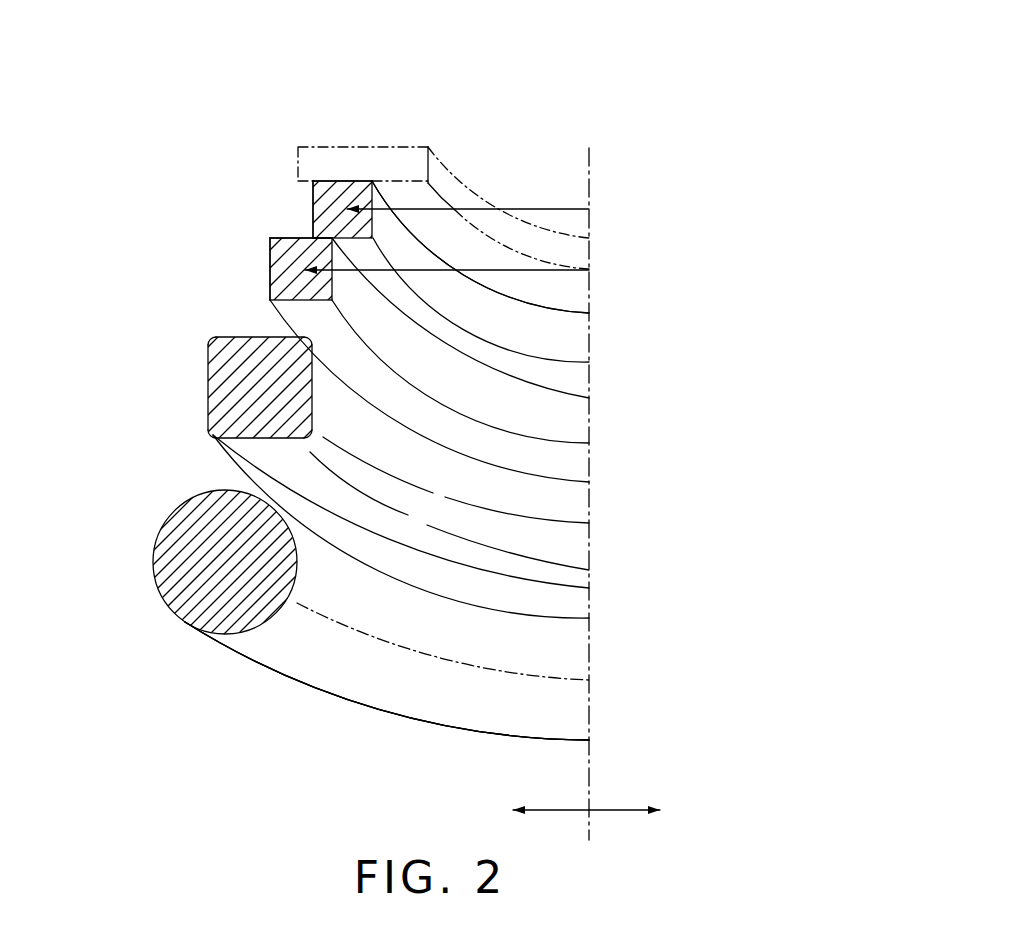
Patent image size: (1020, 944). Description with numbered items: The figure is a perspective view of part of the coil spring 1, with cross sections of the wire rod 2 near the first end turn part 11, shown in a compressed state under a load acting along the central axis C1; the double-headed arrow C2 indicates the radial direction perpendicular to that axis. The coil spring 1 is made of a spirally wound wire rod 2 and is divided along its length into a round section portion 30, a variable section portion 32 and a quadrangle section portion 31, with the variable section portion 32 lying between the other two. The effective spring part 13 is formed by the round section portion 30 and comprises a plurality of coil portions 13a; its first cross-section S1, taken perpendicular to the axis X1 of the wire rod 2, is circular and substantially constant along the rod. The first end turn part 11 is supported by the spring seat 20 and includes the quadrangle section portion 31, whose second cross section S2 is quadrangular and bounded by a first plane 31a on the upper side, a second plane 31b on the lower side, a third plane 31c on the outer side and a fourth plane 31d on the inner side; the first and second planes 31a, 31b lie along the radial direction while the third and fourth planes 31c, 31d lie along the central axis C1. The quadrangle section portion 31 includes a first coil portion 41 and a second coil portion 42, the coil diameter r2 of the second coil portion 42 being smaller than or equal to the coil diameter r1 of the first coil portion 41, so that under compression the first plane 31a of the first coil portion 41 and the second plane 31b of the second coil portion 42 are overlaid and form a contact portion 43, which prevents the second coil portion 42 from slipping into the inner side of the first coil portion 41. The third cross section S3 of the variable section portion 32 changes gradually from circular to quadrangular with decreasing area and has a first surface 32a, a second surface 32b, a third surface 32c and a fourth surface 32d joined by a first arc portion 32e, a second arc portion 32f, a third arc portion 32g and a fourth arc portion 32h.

The coil spring 1 is at (527, 82).
The wire rod 2 is at (230, 648).
The first end turn part 11 is at (565, 310).
The effective spring part 13 is at (283, 703).
The coil portions 13a is at (168, 606).
The spring seat 20 is at (393, 147).
The round section portion 30 is at (510, 741).
The quadrangle section portion 31 is at (573, 385).
The first plane 31a is at (370, 182).
The second plane 31b is at (374, 240).
The third plane 31c is at (312, 208).
The fourth plane 31d is at (426, 146).
The variable section portion 32 is at (573, 545).
The first surface 32a is at (255, 333).
The second surface 32b is at (255, 440).
The third surface 32c is at (208, 388).
The fourth surface 32d is at (312, 405).
The first arc portion 32e is at (210, 342).
The second arc portion 32f is at (208, 433).
The third arc portion 32g is at (312, 338).
The fourth arc portion 32h is at (310, 440).
The first coil portion 41 is at (283, 293).
The second coil portion 42 is at (340, 182).
The contact portion 43 is at (307, 238).
The central axis C1 is at (589, 476).
The radial direction arrow C2 is at (622, 810).
The coil diameter of first coil portion r1 is at (533, 270).
The coil diameter of second coil portion r2 is at (538, 209).
The first cross-section S1 is at (160, 556).
The second cross section S2 is at (285, 258).
The third cross section S3 is at (215, 417).
The axis of wire rod X1 is at (402, 651).